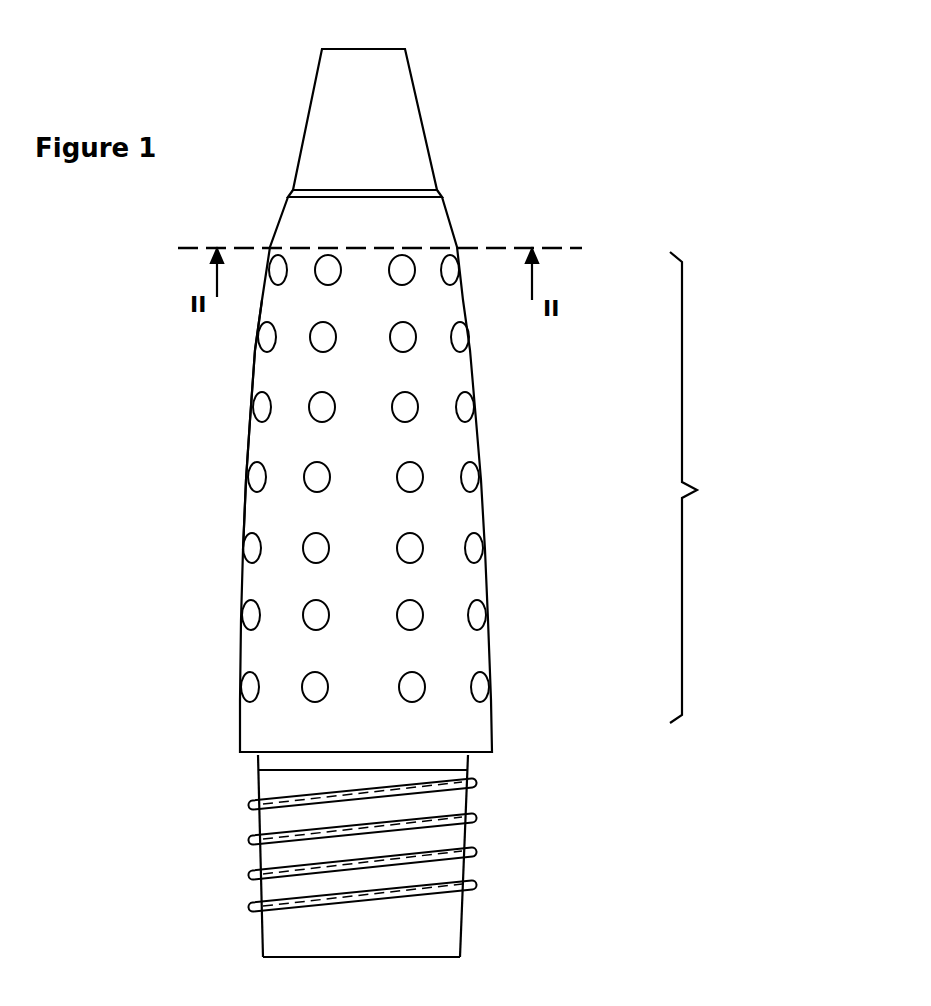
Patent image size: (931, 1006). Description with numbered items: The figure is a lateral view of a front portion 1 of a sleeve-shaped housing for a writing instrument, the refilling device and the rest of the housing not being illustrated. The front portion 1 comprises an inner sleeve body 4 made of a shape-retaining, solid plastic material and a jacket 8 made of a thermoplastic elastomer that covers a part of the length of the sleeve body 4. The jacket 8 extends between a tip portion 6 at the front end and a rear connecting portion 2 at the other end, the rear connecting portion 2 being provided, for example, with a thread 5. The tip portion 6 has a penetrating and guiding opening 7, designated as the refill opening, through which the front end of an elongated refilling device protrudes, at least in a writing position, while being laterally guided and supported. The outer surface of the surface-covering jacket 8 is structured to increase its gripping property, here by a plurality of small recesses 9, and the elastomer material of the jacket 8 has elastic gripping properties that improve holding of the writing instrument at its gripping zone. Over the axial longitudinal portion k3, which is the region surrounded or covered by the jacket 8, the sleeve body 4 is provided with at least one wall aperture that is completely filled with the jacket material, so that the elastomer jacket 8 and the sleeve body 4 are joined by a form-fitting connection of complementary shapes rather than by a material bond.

The front portion 1 is at (550, 450).
The rear connecting portion 2 is at (552, 875).
The inner sleeve body 4 is at (452, 803).
The thread 5 is at (421, 887).
The tip portion 6 is at (383, 115).
The penetrating and guiding opening 7 is at (385, 30).
The jacket 8 is at (277, 444).
The small recesses 9 is at (315, 549).
The axial longitudinal portion k3 is at (702, 487).